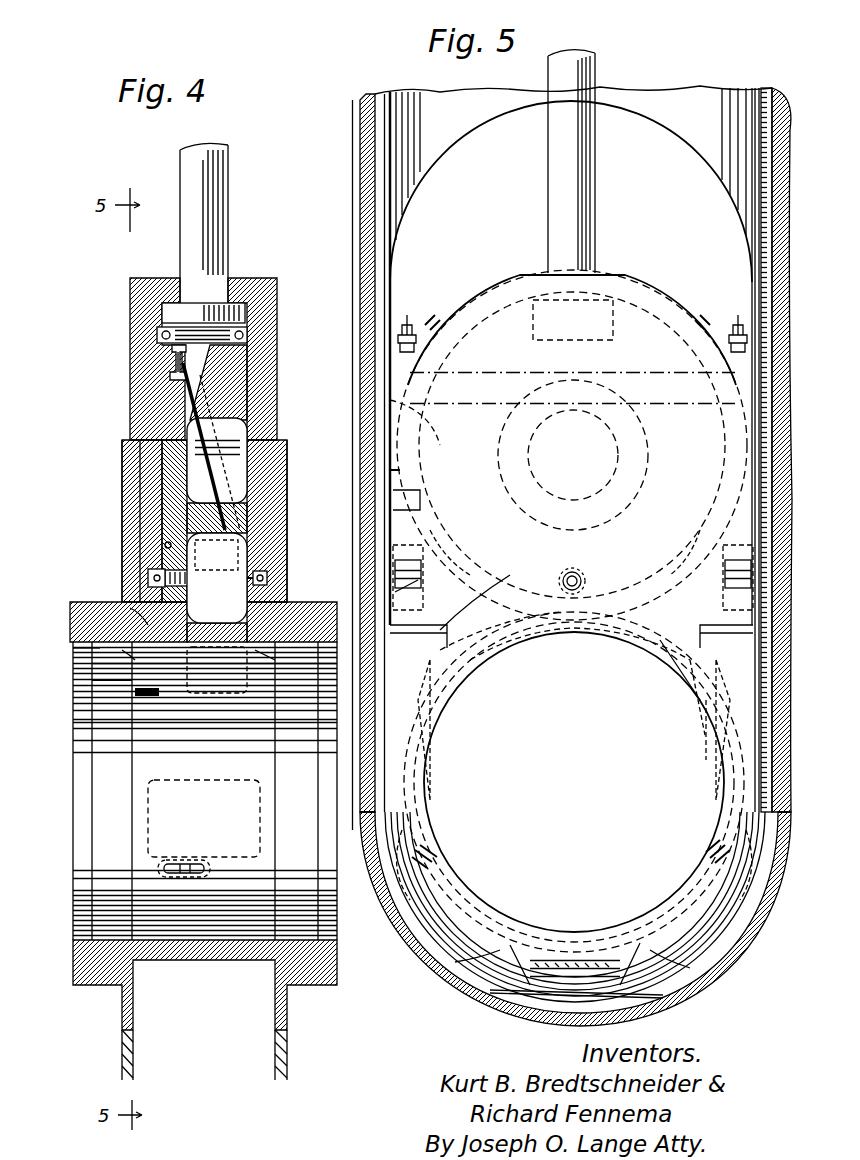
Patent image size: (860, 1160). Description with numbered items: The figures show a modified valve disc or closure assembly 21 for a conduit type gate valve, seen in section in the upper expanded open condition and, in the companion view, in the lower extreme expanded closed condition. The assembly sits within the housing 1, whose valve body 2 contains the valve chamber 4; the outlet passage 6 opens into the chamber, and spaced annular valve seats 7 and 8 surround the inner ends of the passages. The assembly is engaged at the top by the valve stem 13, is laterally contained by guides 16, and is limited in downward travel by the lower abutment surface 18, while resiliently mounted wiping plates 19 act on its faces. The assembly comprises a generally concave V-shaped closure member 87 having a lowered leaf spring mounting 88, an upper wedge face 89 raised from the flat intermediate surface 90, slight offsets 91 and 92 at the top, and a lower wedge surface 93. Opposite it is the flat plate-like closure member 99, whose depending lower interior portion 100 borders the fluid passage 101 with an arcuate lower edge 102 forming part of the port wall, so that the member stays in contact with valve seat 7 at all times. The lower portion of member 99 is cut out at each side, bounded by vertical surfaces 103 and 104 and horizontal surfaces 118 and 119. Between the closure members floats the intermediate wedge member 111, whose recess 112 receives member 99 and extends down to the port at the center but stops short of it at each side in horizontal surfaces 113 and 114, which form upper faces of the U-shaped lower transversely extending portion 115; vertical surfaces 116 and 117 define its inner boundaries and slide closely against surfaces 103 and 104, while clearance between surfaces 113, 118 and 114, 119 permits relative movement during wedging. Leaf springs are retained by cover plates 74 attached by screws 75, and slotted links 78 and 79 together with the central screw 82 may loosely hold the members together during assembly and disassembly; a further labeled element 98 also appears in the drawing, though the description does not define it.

In FIG. 4, the housing 1 is at (327, 607).
In FIG. 5, the housing 1 is at (793, 86).
In FIG. 4, the valve body 2 is at (325, 985).
In FIG. 5, the valve body 2 is at (375, 230).
In FIG. 5, the valve chamber 4 is at (388, 245).
In FIG. 4, the fluid outlet passage 6 is at (337, 925).
In FIG. 5, the fluid outlet passage 6 is at (440, 405).
In FIG. 4, the valve seat 7 is at (73, 653).
In FIG. 4, the valve seat 8 is at (265, 665).
In FIG. 5, the valve seat 8 is at (730, 825).
In FIG. 4, the valve stem 13 is at (228, 183).
In FIG. 5, the valve stem 13 is at (595, 75).
In FIG. 5, the guides 16 is at (372, 306).
In FIG. 5, the lower abutment surface 18 is at (640, 968).
In FIG. 4, the wiping plates 19 is at (122, 474).
In FIG. 5, the wiping plates 19 is at (462, 150).
In FIG. 4, the valve assembly 21 is at (225, 598).
In FIG. 5, the valve assembly 21 is at (423, 585).
In FIG. 4, the cover plates 74 is at (232, 668).
In FIG. 5, the cover plates 74 is at (395, 540).
In FIG. 4, the screws 75 is at (220, 560).
In FIG. 5, the screws 75 is at (450, 540).
In FIG. 4, the upper slotted link 78 is at (246, 348).
In FIG. 5, the upper slotted link 78 is at (448, 325).
In FIG. 4, the lower slotted link 79 is at (190, 850).
In FIG. 5, the lower slotted link 79 is at (440, 848).
In FIG. 4, the screw 82 is at (160, 580).
In FIG. 5, the screw 82 is at (580, 575).
In FIG. 4, the V-shaped closure member 87 is at (280, 315).
In FIG. 5, the V-shaped closure member 87 is at (650, 940).
In FIG. 4, the leaf spring mounting 88 is at (150, 570).
In FIG. 5, the leaf spring mounting 88 is at (430, 560).
In FIG. 4, the upper wedge face 89 is at (247, 425).
In FIG. 5, the upper wedge face 89 is at (640, 465).
In FIG. 4, the flat intermediate surface 90 is at (245, 462).
In FIG. 5, the flat intermediate surface 90 is at (410, 495).
In FIG. 5, the offset 91 is at (532, 276).
In FIG. 5, the offset 92 is at (735, 440).
In FIG. 4, the lower wedge surface 93 is at (200, 800).
In FIG. 5, the lower wedge surface 93 is at (720, 735).
In FIG. 5, the guide 98 is at (390, 425).
In FIG. 4, the plate-like closure member 99 is at (124, 316).
In FIG. 5, the plate-like closure member 99 is at (384, 463).
In FIG. 4, the lower interior portion 100 is at (165, 690).
In FIG. 5, the lower interior portion 100 is at (620, 655).
In FIG. 4, the fluid passage 101 is at (160, 750).
In FIG. 5, the fluid passage 101 is at (430, 950).
In FIG. 4, the arcuate lower edge 102 is at (145, 668).
In FIG. 5, the arcuate lower edge 102 is at (495, 660).
In FIG. 5, the vertical surface 103 is at (500, 628).
In FIG. 5, the vertical surface 104 is at (668, 668).
In FIG. 4, the intermediate wedge member 111 is at (165, 514).
In FIG. 5, the intermediate wedge member 111 is at (440, 723).
In FIG. 4, the recess 112 is at (165, 545).
In FIG. 4, the horizontal surface 113 is at (195, 660).
In FIG. 5, the horizontal surface 113 is at (485, 592).
In FIG. 5, the horizontal surface 114 is at (690, 685).
In FIG. 4, the lower transversely extending portion 115 is at (125, 718).
In FIG. 5, the lower transversely extending portion 115 is at (430, 748).
In FIG. 4, the vertical surface 116 is at (150, 700).
In FIG. 5, the vertical surface 116 is at (450, 690).
In FIG. 5, the vertical surface 117 is at (700, 705).
In FIG. 5, the horizontal surface 118 is at (422, 623).
In FIG. 4, the horizontal surface 119 is at (135, 608).
In FIG. 5, the horizontal surface 119 is at (712, 625).